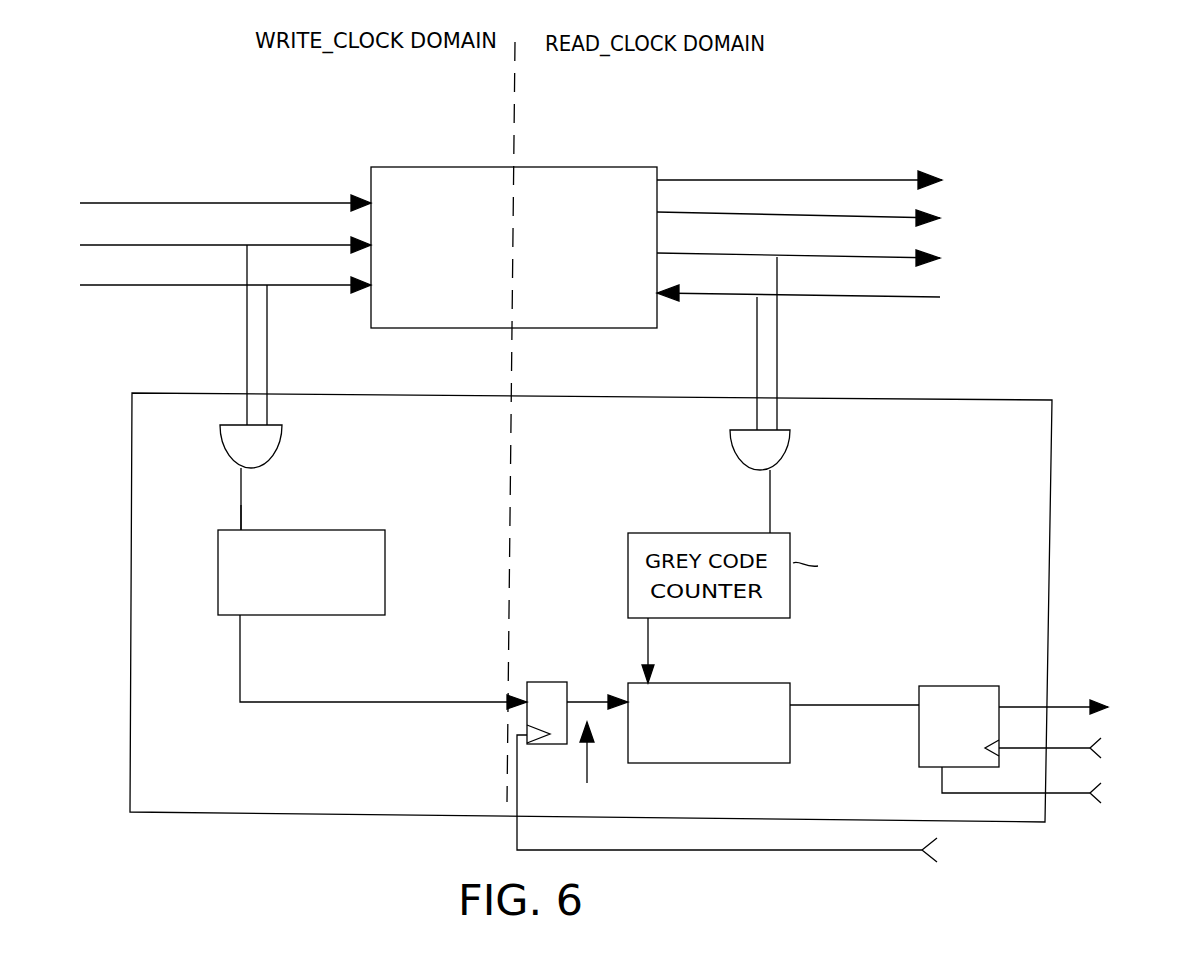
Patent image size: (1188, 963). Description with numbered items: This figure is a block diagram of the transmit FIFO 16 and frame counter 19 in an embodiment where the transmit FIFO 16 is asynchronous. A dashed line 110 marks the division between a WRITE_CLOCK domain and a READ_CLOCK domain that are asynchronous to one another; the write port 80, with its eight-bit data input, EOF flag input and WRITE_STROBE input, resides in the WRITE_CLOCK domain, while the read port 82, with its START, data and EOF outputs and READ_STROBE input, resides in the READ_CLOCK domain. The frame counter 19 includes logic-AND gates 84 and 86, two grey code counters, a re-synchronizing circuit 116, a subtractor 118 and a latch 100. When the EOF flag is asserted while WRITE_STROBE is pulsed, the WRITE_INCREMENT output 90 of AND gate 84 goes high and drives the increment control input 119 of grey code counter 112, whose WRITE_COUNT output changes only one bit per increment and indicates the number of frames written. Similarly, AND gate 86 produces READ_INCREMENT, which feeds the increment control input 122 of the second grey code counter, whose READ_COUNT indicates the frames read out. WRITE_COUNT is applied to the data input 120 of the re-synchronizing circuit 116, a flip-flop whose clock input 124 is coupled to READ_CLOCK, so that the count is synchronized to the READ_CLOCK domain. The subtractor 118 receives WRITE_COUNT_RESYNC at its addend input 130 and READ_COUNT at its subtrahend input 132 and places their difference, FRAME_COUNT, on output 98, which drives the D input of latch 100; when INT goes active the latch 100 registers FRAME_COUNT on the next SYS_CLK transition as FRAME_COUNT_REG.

The frame counter 19 is at (130, 623).
The dashed line 110 is at (515, 105).
The transmit FIFO 16 is at (583, 168).
The write port 80 is at (323, 182).
The read port 82 is at (684, 168).
The logic-AND gate 84 is at (284, 440).
The logic-AND gate 86 is at (792, 440).
The WRITE_INCREMENT output 90 is at (240, 470).
The increment control input 119 is at (240, 518).
The grey code counter 112 is at (388, 546).
The increment control input 122 is at (773, 528).
The data input 120 is at (493, 703).
The re-synchronizing circuit 116 is at (548, 682).
The clock input 124 is at (517, 744).
The addend input 130 is at (615, 705).
The subtrahend input 132 is at (654, 667).
The subtractor 118 is at (790, 740).
The FRAME_COUNT output 98 is at (852, 705).
The latch 100 is at (965, 686).